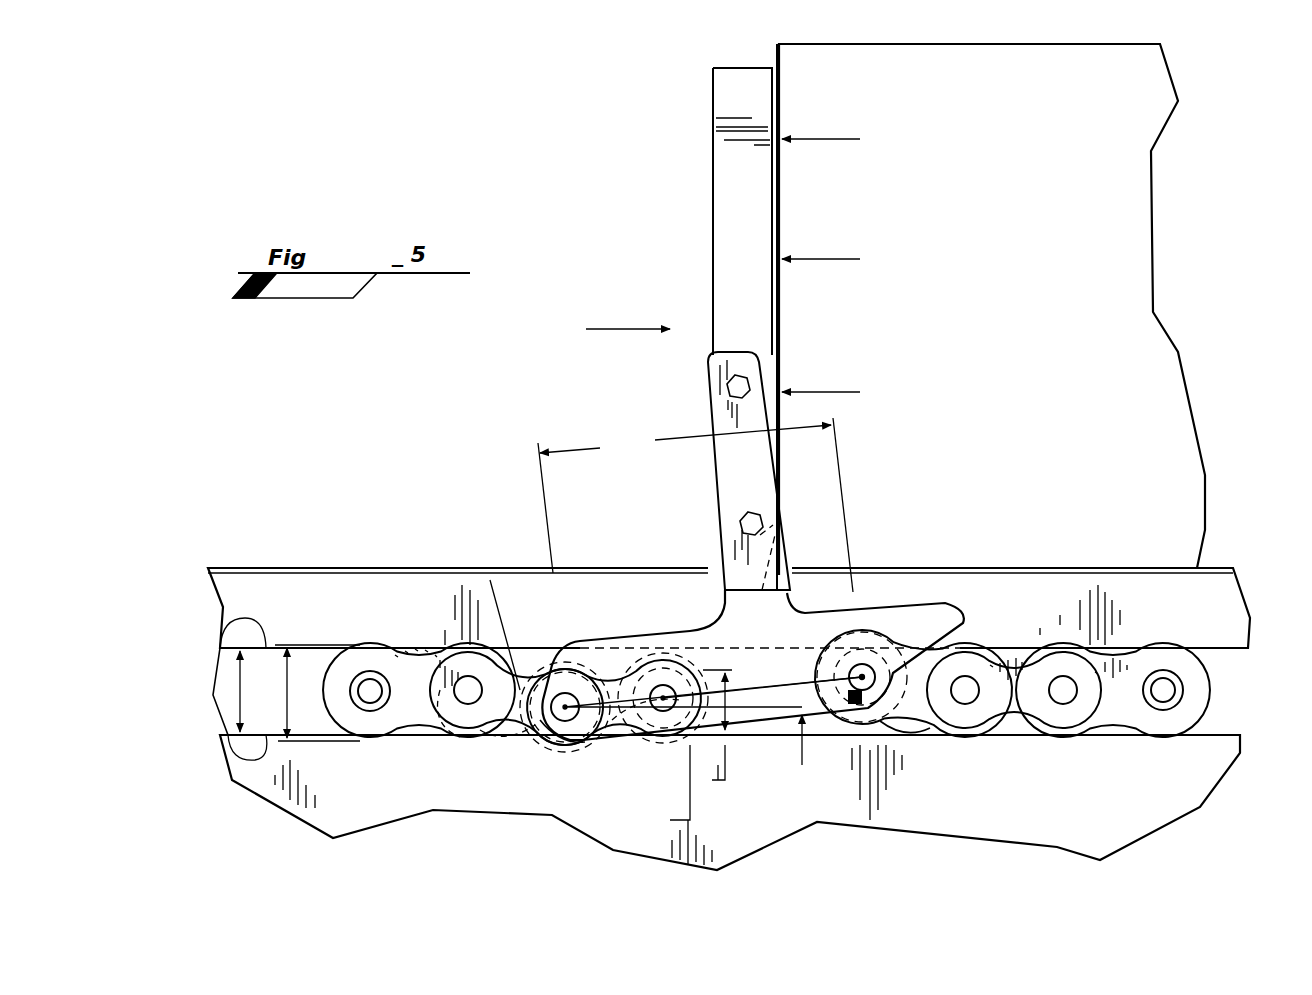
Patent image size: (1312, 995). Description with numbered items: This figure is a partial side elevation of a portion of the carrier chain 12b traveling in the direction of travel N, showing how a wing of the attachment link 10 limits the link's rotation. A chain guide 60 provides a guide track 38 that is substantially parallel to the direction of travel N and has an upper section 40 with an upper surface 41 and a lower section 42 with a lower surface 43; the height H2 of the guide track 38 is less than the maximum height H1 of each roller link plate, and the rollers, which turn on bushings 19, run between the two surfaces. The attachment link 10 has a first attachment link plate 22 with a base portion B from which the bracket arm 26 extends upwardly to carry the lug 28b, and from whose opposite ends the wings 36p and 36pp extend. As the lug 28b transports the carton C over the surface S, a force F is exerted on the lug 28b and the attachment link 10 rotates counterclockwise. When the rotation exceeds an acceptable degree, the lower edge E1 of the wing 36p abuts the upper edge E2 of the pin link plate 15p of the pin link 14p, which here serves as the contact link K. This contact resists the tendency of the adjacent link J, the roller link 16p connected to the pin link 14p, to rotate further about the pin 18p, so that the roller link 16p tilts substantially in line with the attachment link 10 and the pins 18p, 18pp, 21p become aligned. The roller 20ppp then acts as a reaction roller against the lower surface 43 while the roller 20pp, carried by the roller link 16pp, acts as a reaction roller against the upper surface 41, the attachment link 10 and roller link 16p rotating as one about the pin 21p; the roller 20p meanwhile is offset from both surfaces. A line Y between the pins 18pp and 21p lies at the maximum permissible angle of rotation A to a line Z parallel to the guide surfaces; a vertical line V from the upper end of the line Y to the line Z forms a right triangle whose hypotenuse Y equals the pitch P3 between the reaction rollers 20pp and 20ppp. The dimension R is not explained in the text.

The carton C is at (1026, 312).
The lug 28b is at (695, 190).
The bracket arm 26 is at (760, 468).
The force F is at (831, 266).
The direction of travel N is at (616, 329).
The pitch P3 is at (695, 505).
The upper section 40 is at (428, 618).
The upper surface 41 is at (243, 617).
The guide track 38 is at (213, 700).
The height of the guide track H2 is at (243, 691).
The maximum height of the roller link plate H1 is at (317, 693).
The lower section 42 is at (1172, 784).
The lower surface 43 is at (252, 755).
The carrier chain 12b is at (1022, 753).
The bushing 19 is at (375, 692).
The pin link 14p is at (563, 737).
The wing 36p is at (556, 662).
The roller 20p is at (675, 650).
The pin 18p is at (668, 738).
The roller link 16p is at (618, 738).
The pin 21p is at (590, 745).
The pin link plate 15p is at (490, 582).
The roller 20ppp is at (446, 715).
The contact link K is at (432, 735).
The first attachment link plate 22 is at (781, 638).
The attachment link 10 is at (798, 530).
The base portion B is at (828, 595).
The roller 20pp is at (876, 600).
The wing 36pp is at (935, 600).
The pin 18pp is at (935, 618).
The roller link 16pp is at (904, 730).
The surface S is at (1040, 570).
The dimension R is at (712, 731).
The line Y is at (762, 660).
The line Z is at (742, 738).
The maximum permissible angle of rotation A is at (811, 748).
The vertical line V is at (880, 735).
The adjacent link J is at (666, 790).
The lower edge E1 is at (598, 640).
The upper edge E2 is at (510, 690).
The chain guide 60 is at (326, 560).